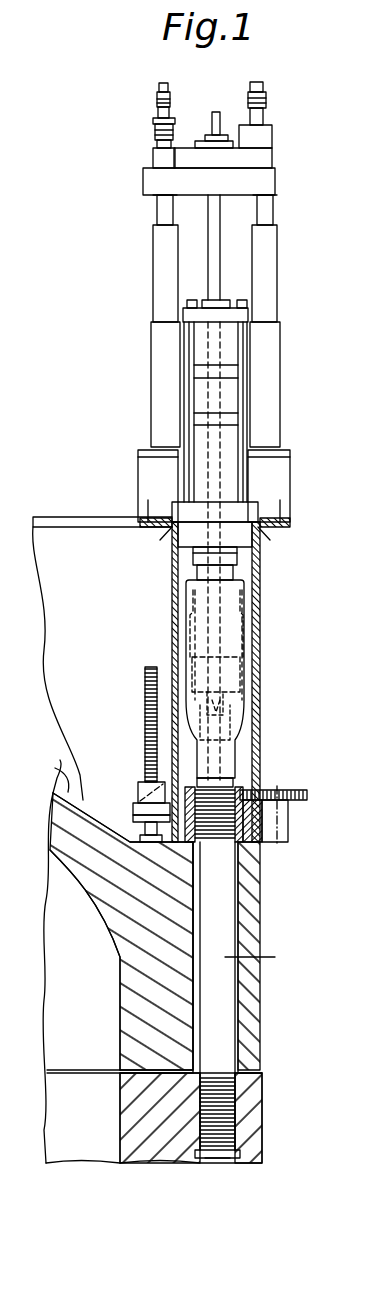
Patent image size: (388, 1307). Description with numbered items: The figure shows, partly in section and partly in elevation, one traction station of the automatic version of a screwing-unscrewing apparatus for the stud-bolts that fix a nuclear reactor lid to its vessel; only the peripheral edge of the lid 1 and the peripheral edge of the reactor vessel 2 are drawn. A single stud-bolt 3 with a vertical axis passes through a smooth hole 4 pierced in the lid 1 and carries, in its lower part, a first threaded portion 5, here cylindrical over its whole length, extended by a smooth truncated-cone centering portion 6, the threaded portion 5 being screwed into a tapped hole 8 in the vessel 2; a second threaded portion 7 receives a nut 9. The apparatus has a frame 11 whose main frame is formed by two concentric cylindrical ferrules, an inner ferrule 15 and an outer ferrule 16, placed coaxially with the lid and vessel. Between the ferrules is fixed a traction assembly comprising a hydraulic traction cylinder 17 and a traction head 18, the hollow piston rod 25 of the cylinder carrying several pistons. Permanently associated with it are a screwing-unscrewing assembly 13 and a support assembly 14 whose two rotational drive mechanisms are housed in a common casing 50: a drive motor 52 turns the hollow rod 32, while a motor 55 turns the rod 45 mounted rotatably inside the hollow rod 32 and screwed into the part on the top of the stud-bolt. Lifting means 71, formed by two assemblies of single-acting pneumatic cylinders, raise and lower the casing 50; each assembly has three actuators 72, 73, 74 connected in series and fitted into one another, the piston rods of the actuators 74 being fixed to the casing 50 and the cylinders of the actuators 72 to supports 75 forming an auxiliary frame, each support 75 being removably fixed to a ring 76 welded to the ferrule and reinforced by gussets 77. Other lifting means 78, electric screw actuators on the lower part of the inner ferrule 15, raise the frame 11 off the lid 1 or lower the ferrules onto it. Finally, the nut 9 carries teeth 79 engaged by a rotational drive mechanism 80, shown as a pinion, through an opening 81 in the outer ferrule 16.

The lid 1 is at (149, 958).
The reactor vessel 2 is at (264, 1115).
The stud-bolt 3 is at (255, 670).
The smooth hole 4 is at (225, 950).
The first threaded portion 5 is at (215, 1095).
The centering portion 6 is at (220, 1156).
The second threaded portion 7 is at (242, 571).
The tapped hole 8 is at (200, 1118).
The nut 9 is at (262, 848).
The frame 11 is at (82, 514).
The screwing-unscrewing assembly 13 is at (203, 138).
The support assembly 14 is at (286, 151).
The inner ferrule 15 is at (220, 682).
The outer ferrule 16 is at (258, 625).
The hydraulic traction cylinder 17 is at (225, 402).
The traction head 18 is at (248, 717).
The piston rod 25 is at (205, 575).
The hollow rod 32 is at (208, 262).
The rod 45 is at (212, 130).
The common casing 50 is at (258, 182).
The drive motor 52 is at (155, 113).
The motor 55 is at (262, 107).
The lifting means 71 is at (213, 336).
The actuator 72 is at (151, 350).
The actuator 73 is at (153, 250).
The actuator 74 is at (157, 222).
The support 75 is at (150, 477).
The ring 76 is at (140, 528).
The gusset 77 is at (170, 542).
The lifting means 78 is at (130, 793).
The teeth 79 is at (255, 790).
The rotational drive mechanism 80 is at (298, 828).
The opening 81 is at (262, 792).